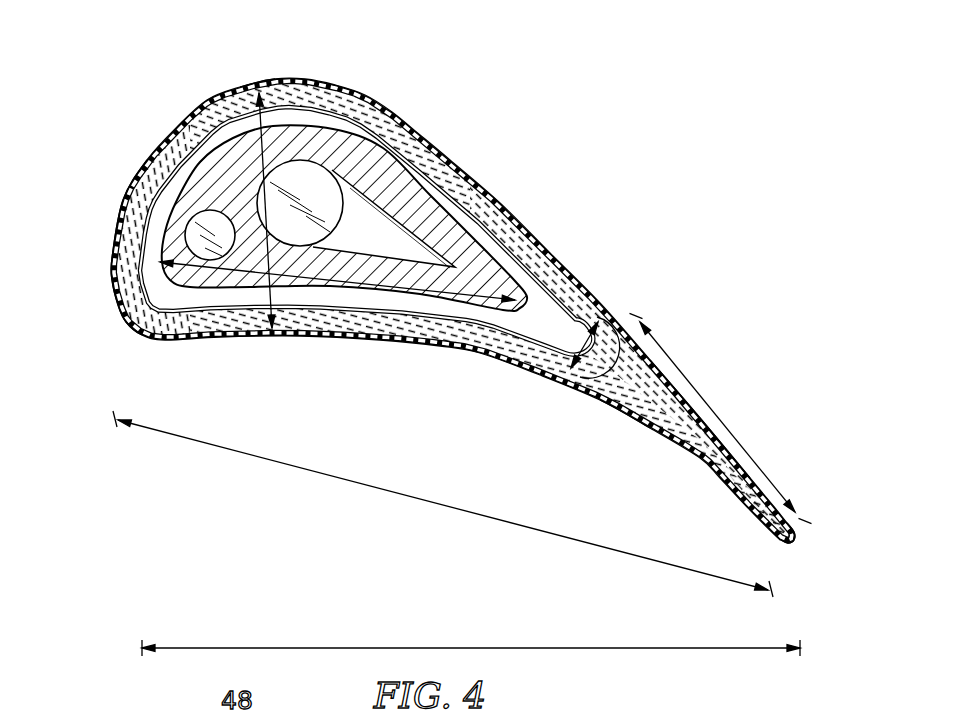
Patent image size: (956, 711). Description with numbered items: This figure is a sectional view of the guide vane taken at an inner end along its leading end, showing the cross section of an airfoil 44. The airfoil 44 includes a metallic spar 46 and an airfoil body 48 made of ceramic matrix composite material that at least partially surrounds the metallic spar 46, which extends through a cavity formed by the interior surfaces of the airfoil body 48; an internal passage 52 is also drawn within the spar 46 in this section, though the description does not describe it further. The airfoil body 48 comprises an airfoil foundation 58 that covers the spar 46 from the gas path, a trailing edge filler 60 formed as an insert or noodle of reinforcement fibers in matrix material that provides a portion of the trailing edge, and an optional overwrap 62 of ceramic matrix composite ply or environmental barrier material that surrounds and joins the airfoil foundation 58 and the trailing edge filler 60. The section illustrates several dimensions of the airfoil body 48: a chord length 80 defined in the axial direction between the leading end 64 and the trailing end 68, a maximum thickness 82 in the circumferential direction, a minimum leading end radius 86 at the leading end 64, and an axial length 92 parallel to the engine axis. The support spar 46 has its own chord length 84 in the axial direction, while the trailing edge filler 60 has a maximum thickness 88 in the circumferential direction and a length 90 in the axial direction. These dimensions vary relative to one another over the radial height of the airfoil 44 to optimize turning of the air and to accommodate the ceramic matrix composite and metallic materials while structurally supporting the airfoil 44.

The airfoil 44 is at (132, 95).
The metallic spar 46 is at (381, 164).
The airfoil body 48 is at (256, 84).
The cooling passage 52 is at (318, 176).
The airfoil foundation 58 is at (152, 162).
The trailing edge filler 60 is at (678, 413).
The overwrap 62 is at (117, 223).
The leading end 64 is at (124, 332).
The trailing end 68 is at (797, 540).
The chord length 80 is at (427, 498).
The maximum thickness 82 is at (290, 128).
The chord length 84 is at (274, 327).
The minimum leading end radius 86 is at (120, 295).
The maximum thickness 88 is at (588, 373).
The length 90 is at (722, 418).
The axial length 92 is at (468, 648).